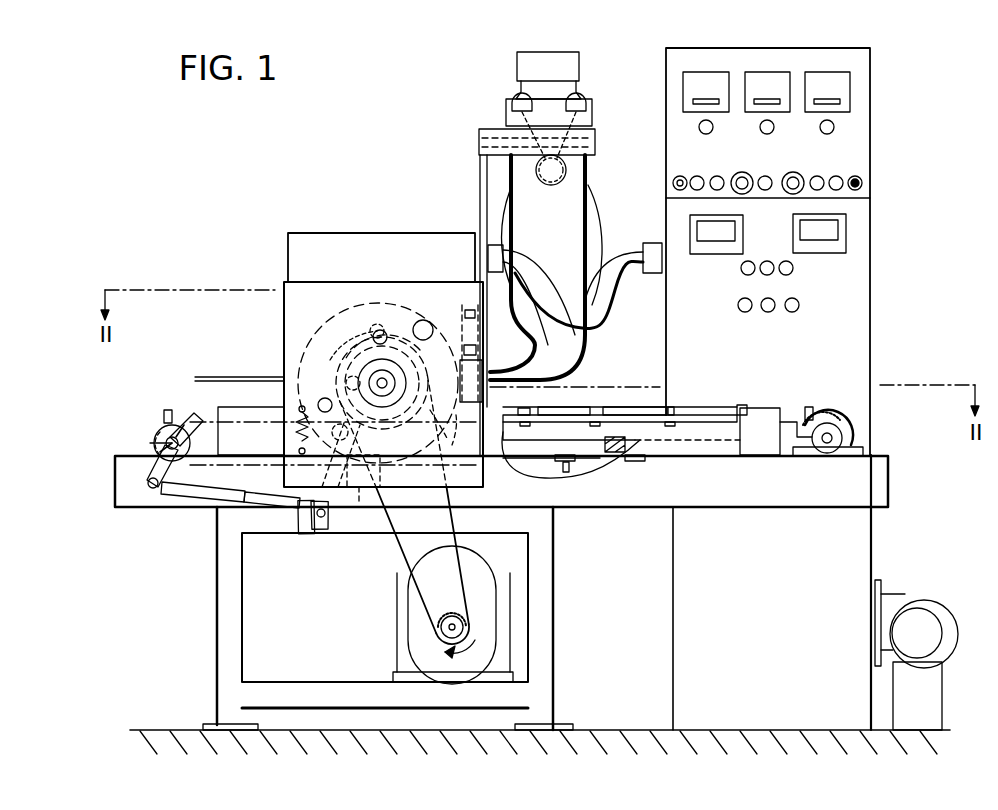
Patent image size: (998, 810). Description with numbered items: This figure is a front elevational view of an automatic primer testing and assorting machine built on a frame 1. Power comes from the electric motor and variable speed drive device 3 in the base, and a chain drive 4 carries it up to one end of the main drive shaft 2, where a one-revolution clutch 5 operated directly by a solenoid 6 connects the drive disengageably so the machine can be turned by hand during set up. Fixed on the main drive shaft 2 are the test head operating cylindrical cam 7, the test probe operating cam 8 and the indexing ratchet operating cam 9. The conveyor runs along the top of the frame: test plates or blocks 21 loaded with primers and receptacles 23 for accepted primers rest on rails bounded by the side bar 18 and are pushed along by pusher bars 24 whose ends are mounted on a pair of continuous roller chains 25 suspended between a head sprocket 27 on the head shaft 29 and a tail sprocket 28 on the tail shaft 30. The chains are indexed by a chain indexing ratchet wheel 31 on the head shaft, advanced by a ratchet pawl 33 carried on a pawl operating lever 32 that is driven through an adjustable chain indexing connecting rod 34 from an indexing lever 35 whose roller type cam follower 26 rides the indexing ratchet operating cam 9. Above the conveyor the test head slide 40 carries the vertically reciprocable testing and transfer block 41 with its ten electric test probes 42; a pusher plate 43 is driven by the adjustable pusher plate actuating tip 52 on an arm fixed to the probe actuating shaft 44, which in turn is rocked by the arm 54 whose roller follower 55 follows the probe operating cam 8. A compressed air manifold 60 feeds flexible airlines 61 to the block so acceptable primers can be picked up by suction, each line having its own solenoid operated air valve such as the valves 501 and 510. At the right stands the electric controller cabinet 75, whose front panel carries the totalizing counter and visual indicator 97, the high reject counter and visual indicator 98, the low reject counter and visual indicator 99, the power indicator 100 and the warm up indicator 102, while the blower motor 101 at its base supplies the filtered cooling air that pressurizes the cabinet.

The frame 1 is at (283, 316).
The main drive shaft 2 is at (372, 380).
The electric motor and variable speed drive device 3 is at (405, 613).
The chain drive 4 is at (412, 556).
The one-revolution clutch 5 is at (330, 402).
The solenoid 6 is at (362, 505).
The test head operating cylindrical cam 7 is at (356, 306).
The test probe operating cam 8 is at (374, 334).
The indexing ratchet operating cam 9 is at (372, 360).
The side bar 18 is at (713, 428).
The test plates or blocks 21 is at (575, 407).
The receptacles 23 is at (640, 410).
The pusher bars 24 is at (168, 410).
The roller chains 25 is at (160, 430).
The roller type cam follower 26 is at (348, 380).
The head sprocket 27 is at (166, 428).
The tail sprocket 28 is at (847, 428).
The head shaft 29 is at (166, 440).
The tail shaft 30 is at (828, 445).
The chain indexing ratchet wheel 31 is at (165, 446).
The pawl operating lever 32 is at (160, 476).
The ratchet pawl 33 is at (197, 418).
The chain indexing connecting rod 34 is at (250, 492).
The indexing lever 35 is at (300, 500).
The test head slide 40 is at (440, 426).
The testing and transfer block 41 is at (495, 387).
The electric test probes 42 is at (430, 322).
The pusher plate 43 is at (465, 345).
The probe actuating shaft 44 is at (415, 322).
The adjustable pusher plate actuating tip 52 is at (468, 305).
The arm 54 is at (380, 330).
The roller follower 55 is at (377, 328).
The compressed air manifold 60 is at (567, 176).
The flexible airlines 61 is at (590, 217).
The electric controller cabinet 75 is at (871, 143).
The totalizing counter and visual indicator 97 is at (770, 86).
The high reject counter and visual indicator 98 is at (821, 88).
The low reject counter and visual indicator 99 is at (706, 86).
The power indicator 100 is at (741, 268).
The blower motor 101 is at (932, 622).
The warm up indicator 102 is at (793, 268).
The solenoid operated air valve 501 is at (582, 118).
The solenoid operated air valve 510 is at (520, 120).